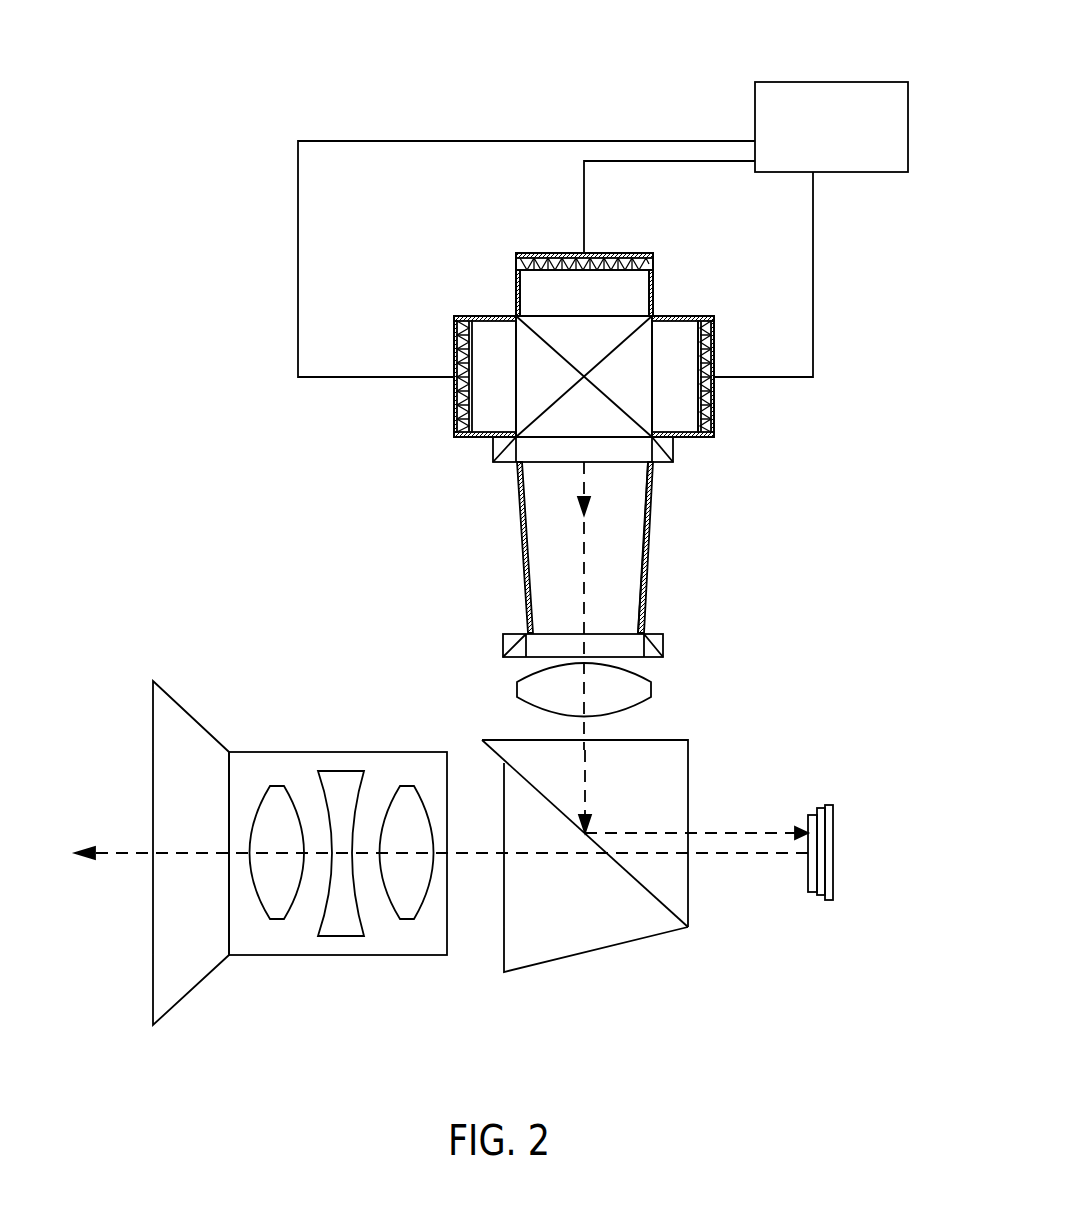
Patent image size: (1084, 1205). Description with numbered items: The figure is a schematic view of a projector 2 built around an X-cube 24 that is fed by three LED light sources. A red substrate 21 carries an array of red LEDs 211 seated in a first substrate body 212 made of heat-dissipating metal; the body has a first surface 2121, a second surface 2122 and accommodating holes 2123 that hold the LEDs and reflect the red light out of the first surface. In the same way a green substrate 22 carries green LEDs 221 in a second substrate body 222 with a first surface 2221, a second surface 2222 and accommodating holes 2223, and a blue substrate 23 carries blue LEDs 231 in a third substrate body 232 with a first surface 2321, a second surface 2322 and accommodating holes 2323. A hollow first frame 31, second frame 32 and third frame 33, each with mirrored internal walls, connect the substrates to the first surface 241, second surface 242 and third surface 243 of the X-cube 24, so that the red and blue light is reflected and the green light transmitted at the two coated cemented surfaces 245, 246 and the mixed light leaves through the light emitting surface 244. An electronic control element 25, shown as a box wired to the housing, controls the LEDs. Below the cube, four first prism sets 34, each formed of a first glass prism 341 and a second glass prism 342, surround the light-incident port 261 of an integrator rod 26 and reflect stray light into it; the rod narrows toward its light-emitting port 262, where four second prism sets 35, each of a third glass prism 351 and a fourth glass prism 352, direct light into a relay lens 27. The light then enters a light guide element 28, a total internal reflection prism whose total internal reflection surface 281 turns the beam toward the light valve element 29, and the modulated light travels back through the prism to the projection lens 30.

The projector 2 is at (696, 100).
The red substrate 21 is at (712, 303).
The red LEDs 211 is at (703, 316).
The first substrate body 212 is at (707, 316).
The first surface 2121 is at (700, 320).
The second surface 2122 is at (717, 340).
The accommodating holes 2123 is at (713, 343).
The green substrate 22 is at (509, 236).
The green LEDs 221 is at (538, 252).
The second substrate body 222 is at (516, 262).
The first surface 2221 is at (516, 277).
The second surface 2222 is at (537, 253).
The accommodating holes 2223 is at (543, 256).
The blue substrate 23 is at (441, 312).
The blue LEDs 231 is at (457, 420).
The third substrate body 232 is at (465, 440).
The first surface 2321 is at (470, 442).
The second surface 2322 is at (457, 432).
The accommodating holes 2323 is at (457, 403).
The X-cube 24 is at (615, 428).
The first surface 241 is at (658, 350).
The second surface 242 is at (573, 313).
The third surface 243 is at (515, 385).
The light emitting surface 244 is at (605, 440).
The cemented surface 245 is at (714, 422).
The cemented surface 246 is at (620, 347).
The electronic control element 25 is at (845, 172).
The integrator rod 26 is at (653, 553).
The light-incident port 261 is at (660, 477).
The light-emitting port 262 is at (642, 625).
The relay lens 27 is at (642, 688).
The light guide element 28 is at (680, 770).
The total internal reflection surface 281 is at (635, 880).
The light valve element 29 is at (835, 840).
The projection lens 30 is at (322, 760).
The first frame 31 is at (680, 425).
The second frame 32 is at (516, 300).
The third frame 33 is at (488, 442).
The first prism set 34 is at (683, 458).
The first glass prism 341 is at (660, 462).
The second glass prism 342 is at (690, 442).
The second prism set 35 is at (678, 643).
The third glass prism 351 is at (657, 660).
The fourth glass prism 352 is at (657, 635).